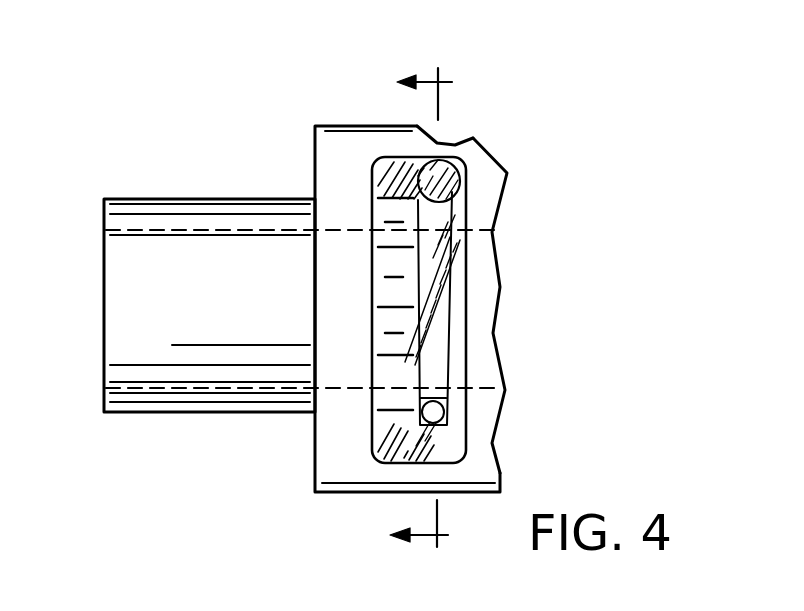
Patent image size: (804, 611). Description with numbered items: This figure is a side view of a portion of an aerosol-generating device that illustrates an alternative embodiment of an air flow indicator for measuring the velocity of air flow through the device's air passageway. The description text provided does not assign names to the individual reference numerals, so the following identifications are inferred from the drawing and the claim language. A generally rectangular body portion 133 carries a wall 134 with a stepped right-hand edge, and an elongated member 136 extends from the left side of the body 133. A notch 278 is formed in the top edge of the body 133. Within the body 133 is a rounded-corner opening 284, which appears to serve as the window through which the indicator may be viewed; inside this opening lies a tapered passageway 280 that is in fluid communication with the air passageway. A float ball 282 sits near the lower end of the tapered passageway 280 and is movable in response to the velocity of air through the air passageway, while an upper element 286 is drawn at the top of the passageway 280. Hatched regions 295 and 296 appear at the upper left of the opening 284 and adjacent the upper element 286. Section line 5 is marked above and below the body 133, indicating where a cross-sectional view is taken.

The section line 5- 5 is at (421, 312).
The housing 133 is at (325, 446).
The side wall 134 is at (500, 272).
The support arm 136 is at (103, 289).
The notch 278 is at (462, 136).
The tube 280 is at (440, 350).
The ball 282 is at (440, 410).
The slot 284 is at (452, 446).
The upper ball 286 is at (442, 204).
The hatched region 295 is at (392, 197).
The retainer 296 is at (420, 183).